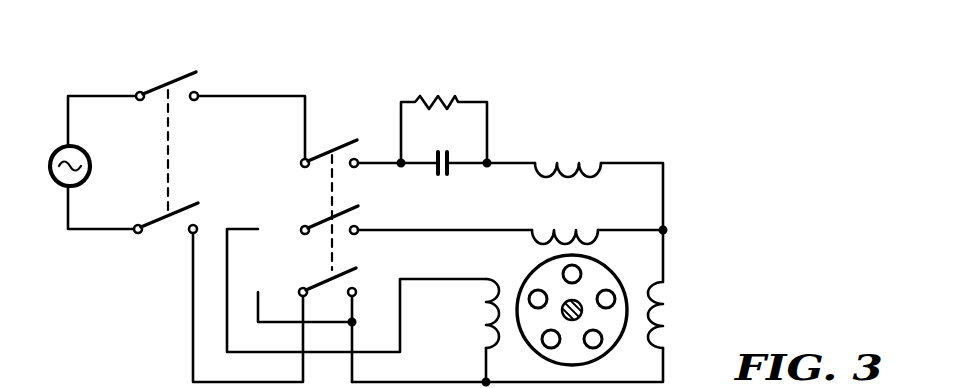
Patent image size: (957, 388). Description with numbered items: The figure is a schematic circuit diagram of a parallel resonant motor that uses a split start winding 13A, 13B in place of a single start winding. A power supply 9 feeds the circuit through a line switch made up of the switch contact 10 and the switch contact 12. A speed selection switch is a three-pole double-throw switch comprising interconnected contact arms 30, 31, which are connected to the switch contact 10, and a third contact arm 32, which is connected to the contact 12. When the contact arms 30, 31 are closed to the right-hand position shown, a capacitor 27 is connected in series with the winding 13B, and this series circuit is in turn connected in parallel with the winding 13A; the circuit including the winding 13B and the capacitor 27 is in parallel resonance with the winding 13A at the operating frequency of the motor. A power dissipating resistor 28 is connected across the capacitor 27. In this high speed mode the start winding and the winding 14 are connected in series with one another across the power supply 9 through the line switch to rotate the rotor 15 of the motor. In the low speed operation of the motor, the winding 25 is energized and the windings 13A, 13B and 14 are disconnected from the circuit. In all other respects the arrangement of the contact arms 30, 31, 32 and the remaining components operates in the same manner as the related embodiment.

The power supply 9 is at (52, 152).
The switch contact 10 is at (158, 85).
The switch contact 12 is at (157, 225).
The split winding section 13A is at (590, 232).
The split winding section 13B is at (594, 171).
The winding 14 is at (664, 288).
The rotor 15 is at (614, 342).
The winding 25 is at (479, 324).
The capacitor 27 is at (448, 173).
The power dissipating resistor 28 is at (450, 98).
The contact arm 30 is at (341, 140).
The contact arm 31 is at (341, 207).
The third contact arm 32 is at (345, 270).